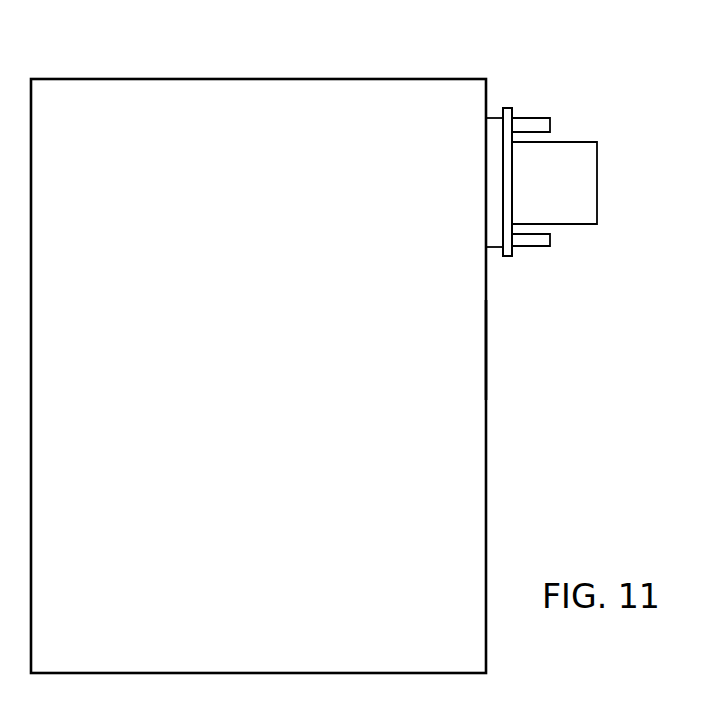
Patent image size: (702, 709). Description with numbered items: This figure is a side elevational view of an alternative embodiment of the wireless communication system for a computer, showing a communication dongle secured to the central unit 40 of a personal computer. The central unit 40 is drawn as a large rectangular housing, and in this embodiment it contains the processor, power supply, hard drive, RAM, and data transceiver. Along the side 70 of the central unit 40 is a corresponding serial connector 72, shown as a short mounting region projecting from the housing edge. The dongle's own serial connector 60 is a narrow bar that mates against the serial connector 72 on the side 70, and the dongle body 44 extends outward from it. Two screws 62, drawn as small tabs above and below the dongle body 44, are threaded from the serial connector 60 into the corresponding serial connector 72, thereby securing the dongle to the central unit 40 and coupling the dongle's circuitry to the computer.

The central unit 40 is at (292, 52).
The electronic component 44 is at (588, 173).
The serial connector 60 is at (508, 162).
The screws 62 is at (532, 125).
The side 70 is at (486, 352).
The serial connector 72 is at (495, 227).